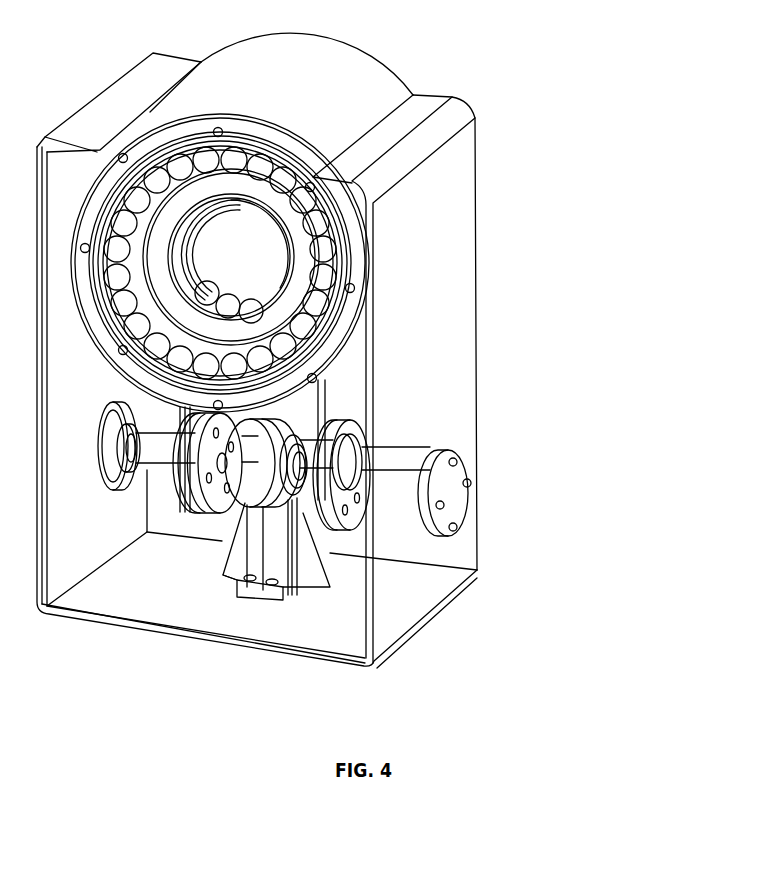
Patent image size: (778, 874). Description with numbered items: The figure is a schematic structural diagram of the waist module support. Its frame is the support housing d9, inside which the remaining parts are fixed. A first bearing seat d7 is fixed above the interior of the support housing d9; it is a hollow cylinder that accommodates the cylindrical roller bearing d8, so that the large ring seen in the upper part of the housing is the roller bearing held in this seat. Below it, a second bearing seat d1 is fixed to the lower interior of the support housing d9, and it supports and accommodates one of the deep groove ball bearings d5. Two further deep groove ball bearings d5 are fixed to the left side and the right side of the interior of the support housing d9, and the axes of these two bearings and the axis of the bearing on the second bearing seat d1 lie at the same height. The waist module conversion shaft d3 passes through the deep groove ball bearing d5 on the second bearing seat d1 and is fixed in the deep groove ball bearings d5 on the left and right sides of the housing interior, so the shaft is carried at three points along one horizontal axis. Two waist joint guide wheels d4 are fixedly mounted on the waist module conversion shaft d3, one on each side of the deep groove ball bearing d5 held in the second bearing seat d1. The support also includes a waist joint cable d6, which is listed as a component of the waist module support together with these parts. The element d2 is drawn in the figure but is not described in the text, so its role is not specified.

The second bearing seat d1 is at (257, 547).
The cover plate d2 is at (455, 495).
The waist module conversion shaft d3 is at (240, 468).
The waist joint guide wheels d4 is at (200, 462).
The deep groove ball bearings d5 is at (140, 422).
The waist joint cable d6 is at (295, 405).
The first bearing seat d7 is at (330, 312).
The cylindrical roller bearing d8 is at (250, 285).
The support housing d9 is at (440, 192).